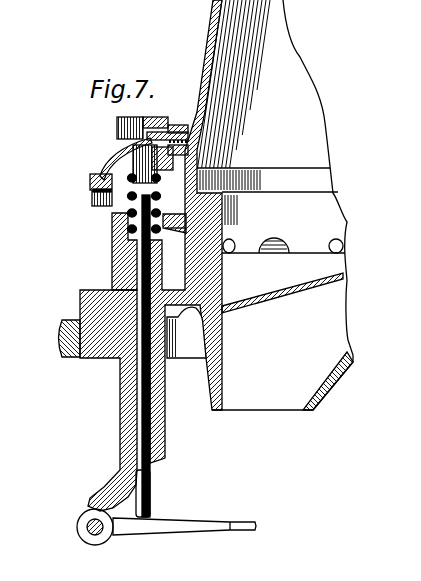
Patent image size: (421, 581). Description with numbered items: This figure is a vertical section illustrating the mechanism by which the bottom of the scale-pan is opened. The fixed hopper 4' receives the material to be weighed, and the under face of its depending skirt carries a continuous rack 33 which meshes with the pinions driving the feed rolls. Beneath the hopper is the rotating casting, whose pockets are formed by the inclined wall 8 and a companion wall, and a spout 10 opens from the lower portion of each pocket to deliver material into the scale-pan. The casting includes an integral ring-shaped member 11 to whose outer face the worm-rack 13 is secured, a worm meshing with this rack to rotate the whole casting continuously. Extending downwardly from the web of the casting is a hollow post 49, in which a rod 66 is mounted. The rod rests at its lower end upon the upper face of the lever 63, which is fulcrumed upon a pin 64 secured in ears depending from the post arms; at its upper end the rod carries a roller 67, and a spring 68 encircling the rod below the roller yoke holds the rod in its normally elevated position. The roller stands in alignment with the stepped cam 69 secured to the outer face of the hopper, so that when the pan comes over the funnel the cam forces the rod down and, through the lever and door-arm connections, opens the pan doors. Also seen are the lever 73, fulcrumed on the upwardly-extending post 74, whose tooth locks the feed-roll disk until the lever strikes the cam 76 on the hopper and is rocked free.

The hopper 4' is at (275, 181).
The inclined wall 8 is at (283, 261).
The spout 10 is at (282, 341).
The ring-shaped member 11 is at (103, 358).
The worm-rack 13 is at (65, 350).
The continuous rack 33 is at (188, 228).
The hollow post 49 is at (120, 407).
The lever 63 is at (168, 527).
The pin 64 is at (97, 537).
The rod 66 is at (145, 440).
The roller 67 is at (127, 147).
The spring 68 is at (128, 205).
The stepped cam 69 is at (198, 157).
The lever 73 is at (102, 162).
The post 74 is at (118, 228).
The cam 76 is at (115, 122).